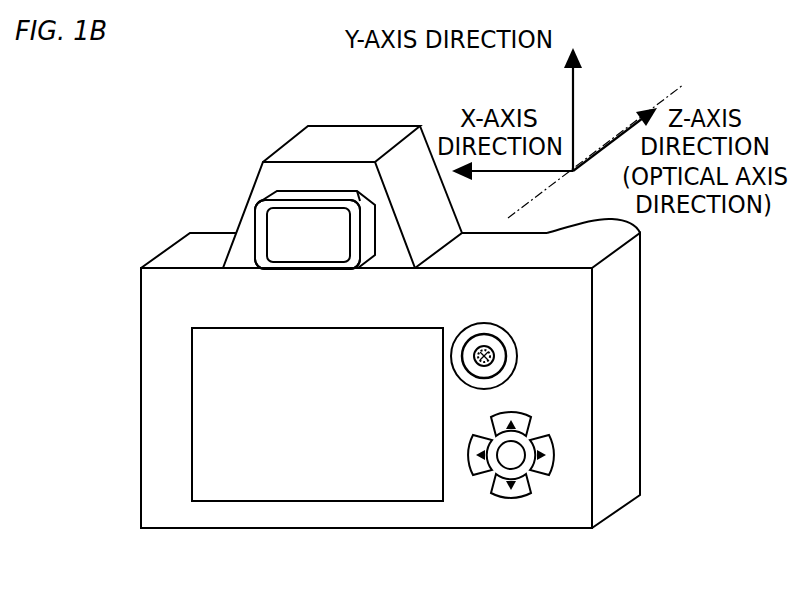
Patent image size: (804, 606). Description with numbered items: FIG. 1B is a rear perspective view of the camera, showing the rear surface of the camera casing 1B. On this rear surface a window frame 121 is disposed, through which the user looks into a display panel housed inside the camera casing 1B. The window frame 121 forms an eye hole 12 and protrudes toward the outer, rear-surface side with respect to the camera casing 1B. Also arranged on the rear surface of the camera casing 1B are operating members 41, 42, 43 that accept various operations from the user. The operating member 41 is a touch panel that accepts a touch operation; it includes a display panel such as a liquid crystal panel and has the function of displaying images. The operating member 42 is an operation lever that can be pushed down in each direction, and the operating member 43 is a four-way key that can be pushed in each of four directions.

The camera casing 1B is at (141, 482).
The eye hole 12 is at (297, 228).
The window frame 121 is at (255, 228).
The operating member (touch panel) 41 is at (393, 458).
The operating member (operation lever) 42 is at (492, 348).
The operating member (four-way key) 43 is at (555, 443).